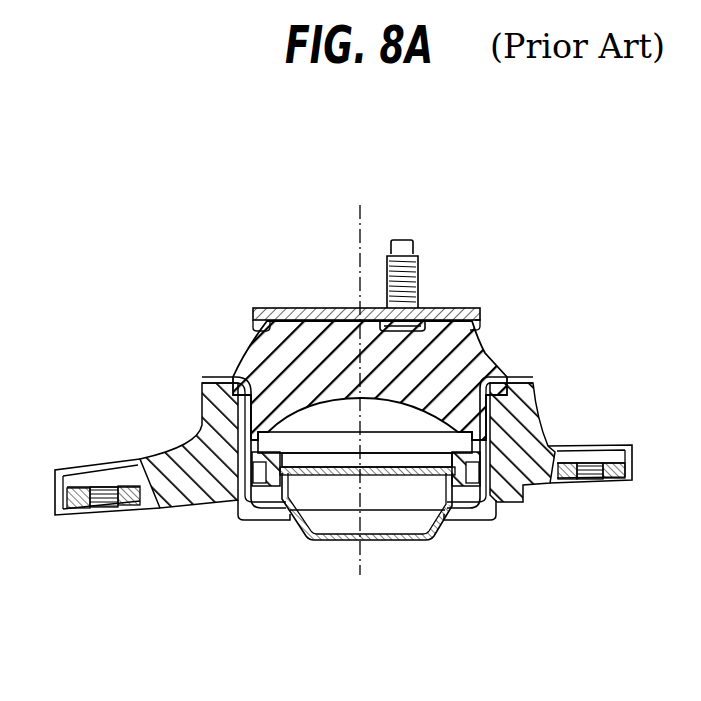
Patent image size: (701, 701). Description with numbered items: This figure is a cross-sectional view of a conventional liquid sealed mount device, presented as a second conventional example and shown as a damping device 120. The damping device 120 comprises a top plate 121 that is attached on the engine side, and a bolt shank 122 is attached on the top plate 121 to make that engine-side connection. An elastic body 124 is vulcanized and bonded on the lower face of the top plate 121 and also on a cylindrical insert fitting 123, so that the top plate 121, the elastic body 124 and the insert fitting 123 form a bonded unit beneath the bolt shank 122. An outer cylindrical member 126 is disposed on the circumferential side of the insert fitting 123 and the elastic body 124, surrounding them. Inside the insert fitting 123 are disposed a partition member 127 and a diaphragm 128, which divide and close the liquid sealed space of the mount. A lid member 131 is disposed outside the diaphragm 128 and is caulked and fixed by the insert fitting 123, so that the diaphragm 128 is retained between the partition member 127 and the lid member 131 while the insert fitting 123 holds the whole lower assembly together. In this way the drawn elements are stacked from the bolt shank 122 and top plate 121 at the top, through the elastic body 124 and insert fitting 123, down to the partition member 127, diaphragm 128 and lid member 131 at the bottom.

The damping device 120 is at (187, 236).
The top plate 121 is at (293, 306).
The bolt shank 122 is at (420, 265).
The cylindrical insert fitting 123 is at (203, 408).
The elastic body 124 is at (485, 360).
The outer cylindrical member 126 is at (537, 408).
The partition member 127 is at (272, 517).
The diaphragm 128 is at (327, 483).
The lid member 131 is at (417, 543).